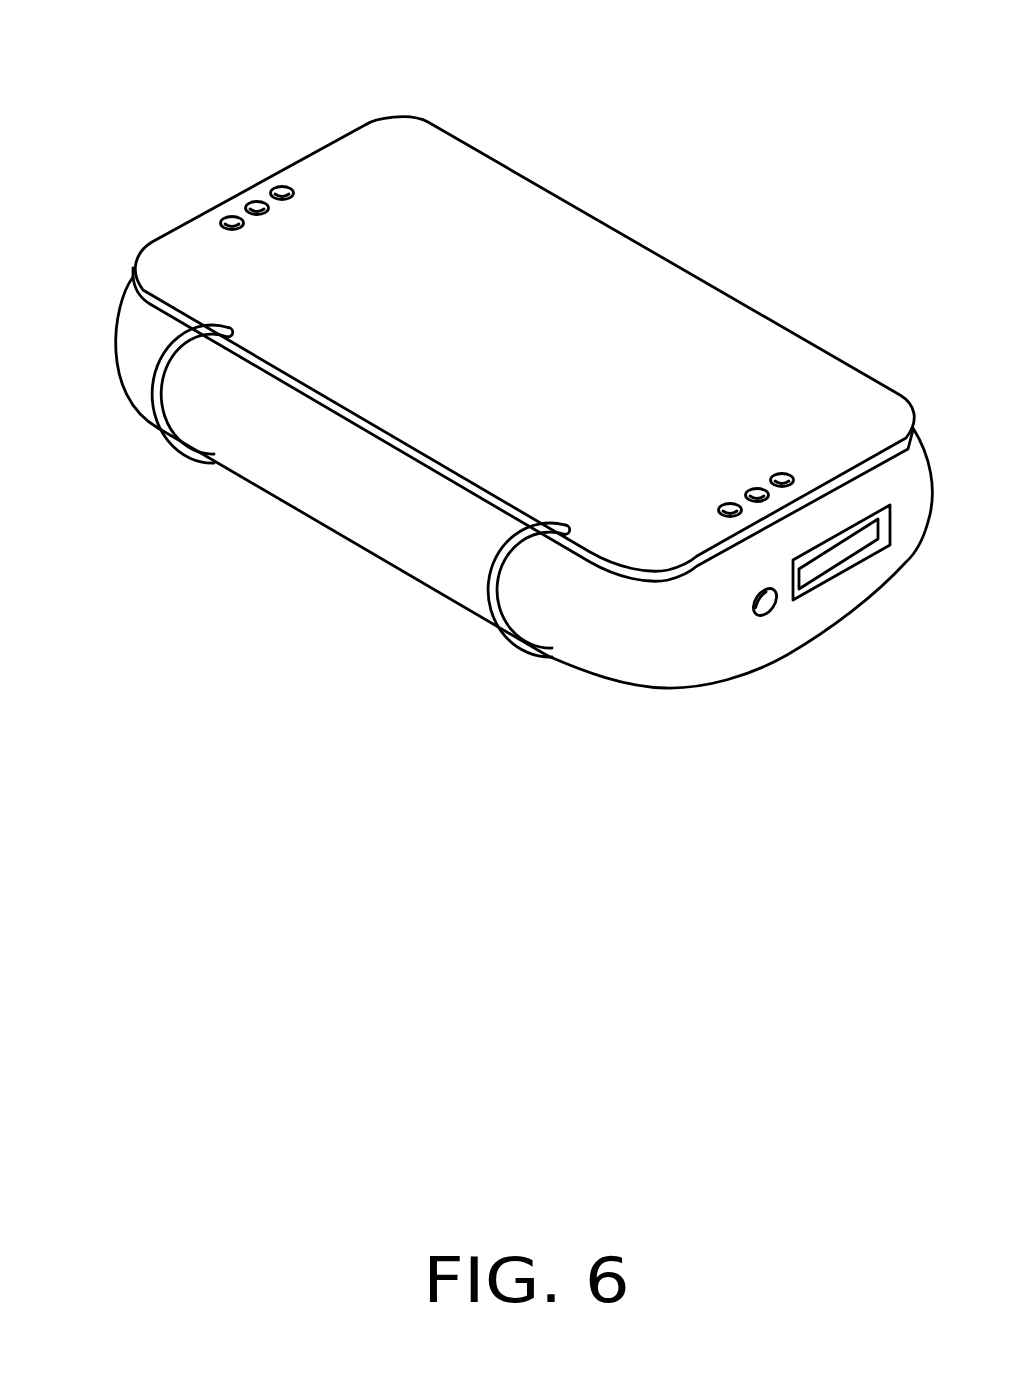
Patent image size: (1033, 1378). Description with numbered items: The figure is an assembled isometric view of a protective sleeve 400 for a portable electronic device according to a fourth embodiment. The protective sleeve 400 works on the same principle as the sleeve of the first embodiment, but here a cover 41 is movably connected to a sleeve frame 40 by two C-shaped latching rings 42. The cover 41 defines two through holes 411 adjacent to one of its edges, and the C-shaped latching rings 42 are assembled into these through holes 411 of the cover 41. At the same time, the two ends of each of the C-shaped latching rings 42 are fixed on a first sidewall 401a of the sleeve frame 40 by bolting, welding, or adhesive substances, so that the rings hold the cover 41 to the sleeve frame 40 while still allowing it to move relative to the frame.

The protective sleeve 400 is at (214, 84).
The sleeve frame 40 is at (690, 640).
The first sidewall 401a is at (363, 497).
The cover 41 is at (485, 203).
The through holes 411 is at (227, 327).
The C-shaped latching rings 42 is at (163, 440).